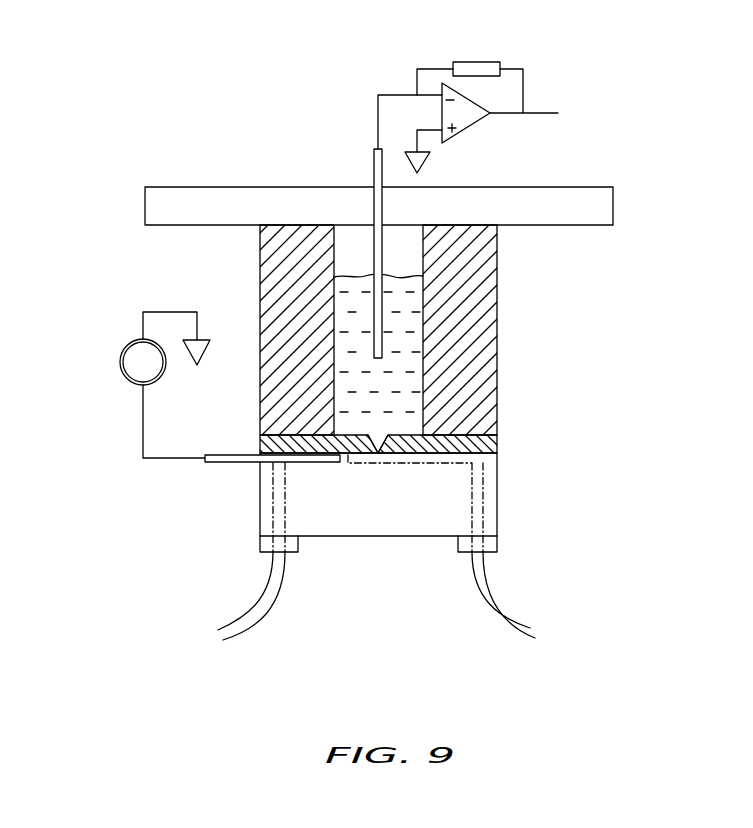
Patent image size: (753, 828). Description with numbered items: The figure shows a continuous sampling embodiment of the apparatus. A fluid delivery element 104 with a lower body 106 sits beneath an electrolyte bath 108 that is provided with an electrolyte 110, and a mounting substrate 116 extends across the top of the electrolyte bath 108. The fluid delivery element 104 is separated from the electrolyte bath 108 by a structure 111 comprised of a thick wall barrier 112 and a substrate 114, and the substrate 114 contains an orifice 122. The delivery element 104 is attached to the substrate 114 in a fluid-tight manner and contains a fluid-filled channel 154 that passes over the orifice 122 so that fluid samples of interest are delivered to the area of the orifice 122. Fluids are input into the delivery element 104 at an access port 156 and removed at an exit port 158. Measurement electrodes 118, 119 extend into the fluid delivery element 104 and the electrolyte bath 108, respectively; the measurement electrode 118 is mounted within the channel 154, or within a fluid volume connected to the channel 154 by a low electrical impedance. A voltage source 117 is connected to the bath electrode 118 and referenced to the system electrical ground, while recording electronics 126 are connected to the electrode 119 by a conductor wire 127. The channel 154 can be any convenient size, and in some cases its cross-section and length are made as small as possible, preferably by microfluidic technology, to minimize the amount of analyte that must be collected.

The fluid delivery element 104 is at (378, 536).
The lower body 106 is at (395, 517).
The electrolyte bath 108 is at (442, 275).
The electrolyte 110 is at (353, 276).
The structure 111 is at (375, 330).
The thick wall barrier 112 is at (477, 358).
The substrate 114 is at (487, 442).
The mounting substrate 116 is at (168, 200).
The voltage source 117 is at (123, 345).
The measurement electrode 118 is at (220, 463).
The measurement electrode 119 is at (377, 183).
The orifice 122 is at (378, 453).
The recording electronics 126 is at (467, 115).
The conductor wire 127 is at (387, 93).
The fluid-filled channel 154 is at (350, 460).
The access port 156 is at (215, 638).
The exit port 158 is at (544, 638).